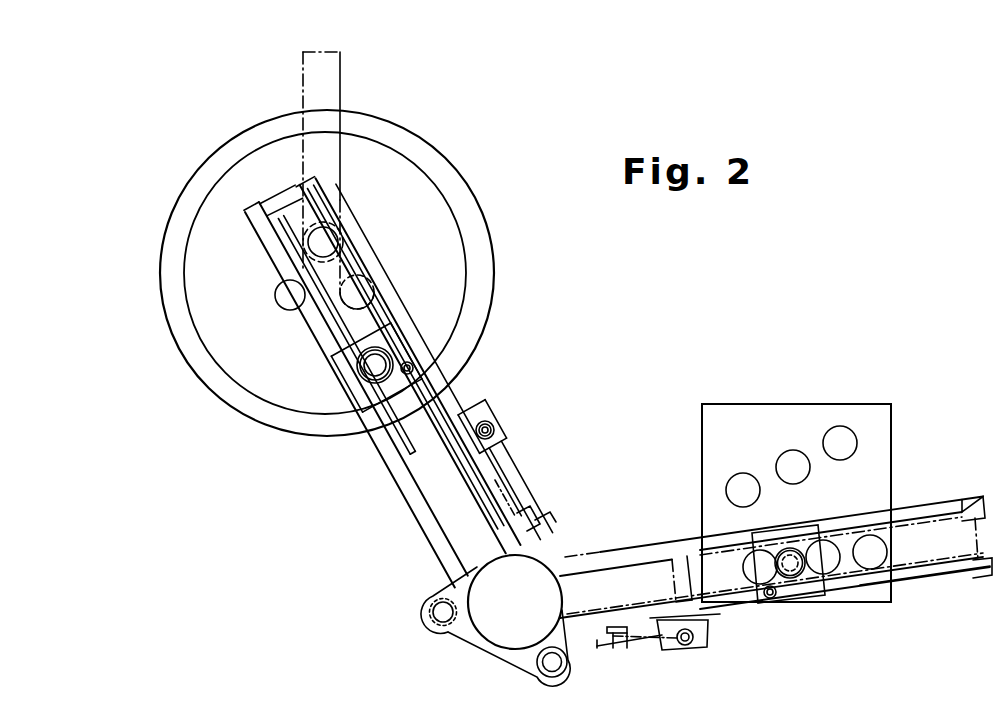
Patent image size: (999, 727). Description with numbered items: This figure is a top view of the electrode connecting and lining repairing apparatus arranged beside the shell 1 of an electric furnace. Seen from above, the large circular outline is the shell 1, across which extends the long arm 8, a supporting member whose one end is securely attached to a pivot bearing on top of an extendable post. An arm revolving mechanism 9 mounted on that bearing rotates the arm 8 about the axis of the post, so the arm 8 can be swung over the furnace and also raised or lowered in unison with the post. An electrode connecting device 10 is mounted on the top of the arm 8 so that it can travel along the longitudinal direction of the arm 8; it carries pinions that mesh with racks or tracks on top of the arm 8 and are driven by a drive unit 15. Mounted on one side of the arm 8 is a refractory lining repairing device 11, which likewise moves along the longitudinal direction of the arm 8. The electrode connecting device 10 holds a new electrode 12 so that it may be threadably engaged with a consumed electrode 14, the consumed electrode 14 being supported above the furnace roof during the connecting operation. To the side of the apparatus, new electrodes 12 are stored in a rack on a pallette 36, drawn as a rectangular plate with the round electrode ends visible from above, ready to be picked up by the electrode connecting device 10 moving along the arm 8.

The shell 1 is at (467, 182).
The arm 8 is at (398, 472).
The arm revolving mechanism 9 is at (537, 673).
The electrode connecting device 10 is at (347, 403).
The refractory lining repairing device 11 is at (477, 410).
The new electrode 12 is at (833, 433).
The consumed electrode 14 is at (283, 306).
The drive unit 15 is at (416, 360).
The pallette 36 is at (870, 410).